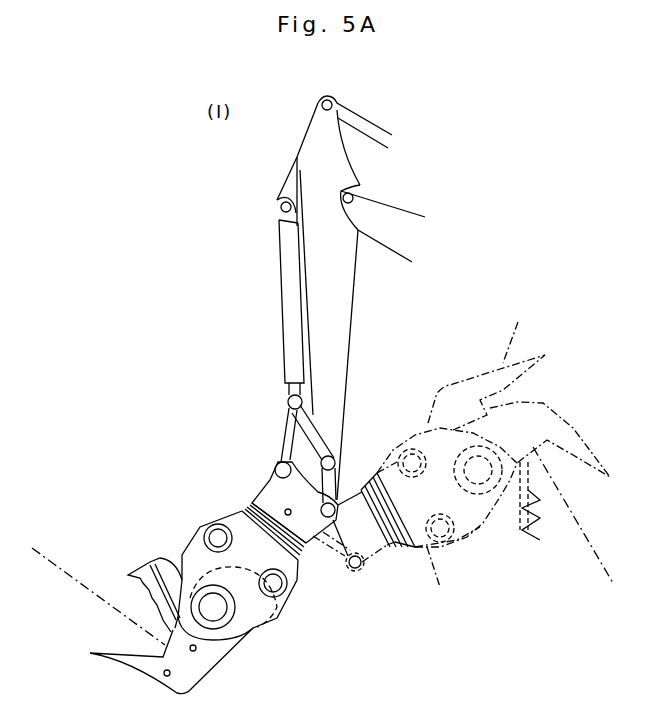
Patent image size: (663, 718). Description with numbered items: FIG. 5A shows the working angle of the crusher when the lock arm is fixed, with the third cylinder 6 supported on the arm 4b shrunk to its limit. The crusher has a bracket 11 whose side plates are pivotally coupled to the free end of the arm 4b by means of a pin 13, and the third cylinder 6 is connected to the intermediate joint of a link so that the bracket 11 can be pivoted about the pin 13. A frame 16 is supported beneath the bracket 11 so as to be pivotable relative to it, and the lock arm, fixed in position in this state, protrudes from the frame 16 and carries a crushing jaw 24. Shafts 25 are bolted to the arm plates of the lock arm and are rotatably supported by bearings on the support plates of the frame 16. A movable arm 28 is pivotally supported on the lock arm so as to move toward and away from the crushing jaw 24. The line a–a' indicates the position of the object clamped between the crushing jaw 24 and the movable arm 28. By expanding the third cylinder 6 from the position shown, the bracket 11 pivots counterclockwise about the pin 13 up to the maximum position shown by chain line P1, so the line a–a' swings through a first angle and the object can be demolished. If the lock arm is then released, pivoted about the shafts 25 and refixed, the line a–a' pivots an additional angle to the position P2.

The third cylinder 6 is at (282, 286).
The arm 4b is at (354, 310).
The pin 13 is at (343, 494).
The bracket 11 is at (268, 485).
The frame 16 is at (195, 532).
The shaft 25 is at (214, 608).
The movable arm 28 is at (143, 568).
The crushing jaw 24 is at (118, 663).
The line a-a' a is at (185, 654).
The line a- a' is at (86, 588).
The chain line P1 is at (444, 580).
The position P2 is at (521, 331).